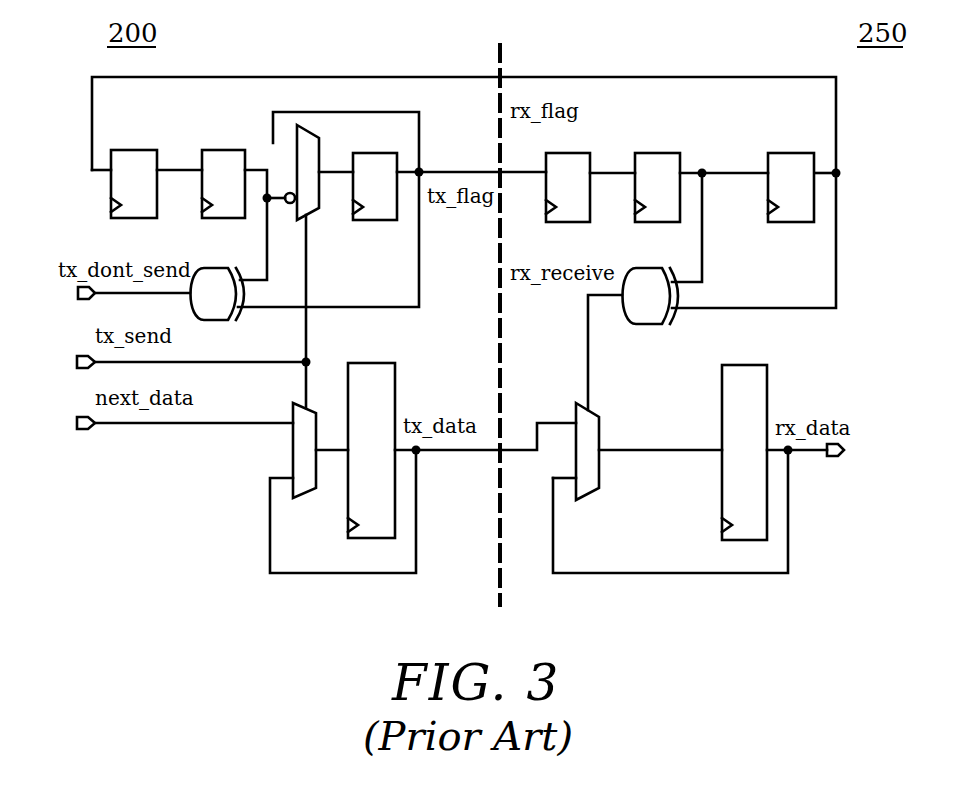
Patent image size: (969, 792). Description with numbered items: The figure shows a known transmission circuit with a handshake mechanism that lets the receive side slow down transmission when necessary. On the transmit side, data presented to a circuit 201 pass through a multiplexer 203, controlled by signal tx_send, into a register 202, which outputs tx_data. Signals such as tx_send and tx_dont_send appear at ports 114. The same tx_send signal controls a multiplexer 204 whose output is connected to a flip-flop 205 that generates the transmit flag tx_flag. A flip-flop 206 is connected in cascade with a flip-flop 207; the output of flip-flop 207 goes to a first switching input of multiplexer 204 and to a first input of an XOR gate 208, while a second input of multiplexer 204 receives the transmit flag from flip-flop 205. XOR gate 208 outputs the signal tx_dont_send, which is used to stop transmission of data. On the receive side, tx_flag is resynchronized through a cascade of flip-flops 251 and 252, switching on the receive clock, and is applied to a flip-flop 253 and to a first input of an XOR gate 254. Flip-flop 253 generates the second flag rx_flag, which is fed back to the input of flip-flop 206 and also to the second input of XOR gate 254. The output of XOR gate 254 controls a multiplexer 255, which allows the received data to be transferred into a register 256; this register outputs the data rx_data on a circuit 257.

The input signal port 114 is at (78, 291).
The circuit 201 is at (142, 425).
The register 202 is at (397, 388).
The multiplexer 203 is at (290, 440).
The multiplexer 204 is at (312, 213).
The flip-flop 205 is at (389, 152).
The flip-flop 206 is at (121, 152).
The flip-flop 207 is at (205, 152).
The XOR gate 208 is at (228, 323).
The flip-flop 251 is at (578, 152).
The flip-flop 252 is at (655, 152).
The flip-flop 253 is at (778, 224).
The XOR gate 254 is at (662, 327).
The multiplexer 255 is at (579, 501).
The register 256 is at (722, 458).
The circuit 257 is at (798, 455).